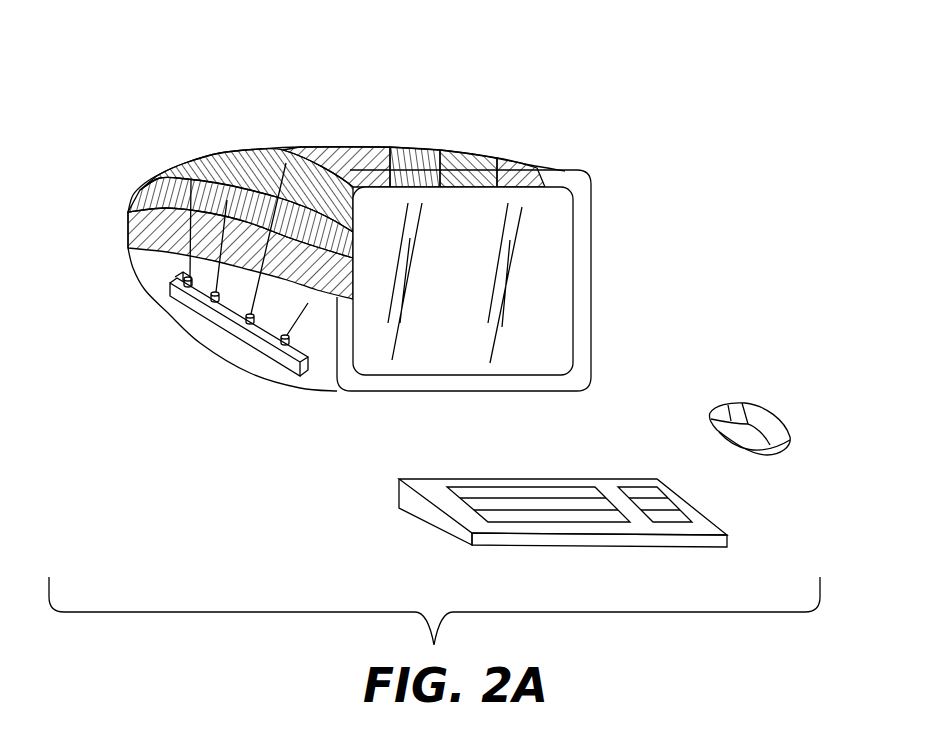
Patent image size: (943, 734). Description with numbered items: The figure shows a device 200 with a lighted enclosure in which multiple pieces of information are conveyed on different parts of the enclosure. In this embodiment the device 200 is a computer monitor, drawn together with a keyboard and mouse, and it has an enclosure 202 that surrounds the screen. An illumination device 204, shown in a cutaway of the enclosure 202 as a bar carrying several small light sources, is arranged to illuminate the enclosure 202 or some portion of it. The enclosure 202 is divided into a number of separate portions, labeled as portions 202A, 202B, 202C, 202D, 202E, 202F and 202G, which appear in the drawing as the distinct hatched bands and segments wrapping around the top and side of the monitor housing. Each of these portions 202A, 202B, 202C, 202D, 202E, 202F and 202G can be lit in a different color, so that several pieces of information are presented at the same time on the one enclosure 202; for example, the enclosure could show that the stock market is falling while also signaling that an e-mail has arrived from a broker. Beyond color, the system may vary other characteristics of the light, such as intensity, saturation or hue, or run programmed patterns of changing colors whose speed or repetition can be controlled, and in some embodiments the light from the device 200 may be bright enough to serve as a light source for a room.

The device 200 is at (573, 123).
The enclosure 202 is at (207, 158).
The portion of the enclosure 202A is at (133, 222).
The portion of the enclosure 202B is at (157, 182).
The portion of the enclosure 202C is at (217, 157).
The portion of the enclosure 202D is at (320, 147).
The portion of the enclosure 202E is at (400, 147).
The portion of the enclosure 202F is at (457, 148).
The portion of the enclosure 202G is at (523, 160).
The illumination device 204 is at (213, 322).